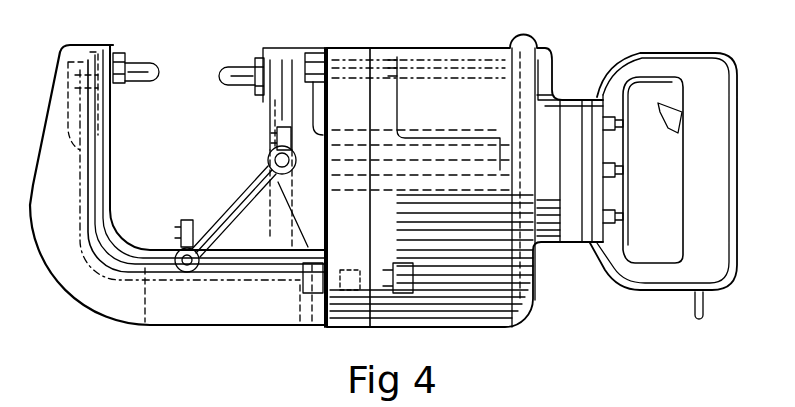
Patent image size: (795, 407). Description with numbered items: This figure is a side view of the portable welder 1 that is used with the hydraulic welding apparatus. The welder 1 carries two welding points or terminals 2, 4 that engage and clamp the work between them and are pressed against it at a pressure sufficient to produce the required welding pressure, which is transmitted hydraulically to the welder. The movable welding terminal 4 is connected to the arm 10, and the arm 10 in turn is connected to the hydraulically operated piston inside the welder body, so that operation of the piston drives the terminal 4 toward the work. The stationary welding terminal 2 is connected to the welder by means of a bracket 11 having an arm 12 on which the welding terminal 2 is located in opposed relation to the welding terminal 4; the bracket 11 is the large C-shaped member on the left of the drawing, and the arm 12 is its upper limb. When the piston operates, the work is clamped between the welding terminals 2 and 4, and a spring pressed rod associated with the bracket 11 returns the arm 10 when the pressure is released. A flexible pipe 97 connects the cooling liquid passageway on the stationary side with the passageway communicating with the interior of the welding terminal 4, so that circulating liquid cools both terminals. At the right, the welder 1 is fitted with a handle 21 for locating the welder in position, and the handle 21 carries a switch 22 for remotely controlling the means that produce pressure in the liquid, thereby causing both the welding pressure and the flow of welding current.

The welder 1 is at (437, 87).
The welding terminal 2 is at (142, 76).
The welding terminal 4 is at (227, 78).
The arm 10 is at (291, 90).
The bracket 11 is at (202, 297).
The arm 12 is at (63, 156).
The handle 21 is at (703, 173).
The switch 22 is at (673, 118).
The flexible pipe 97 is at (230, 213).